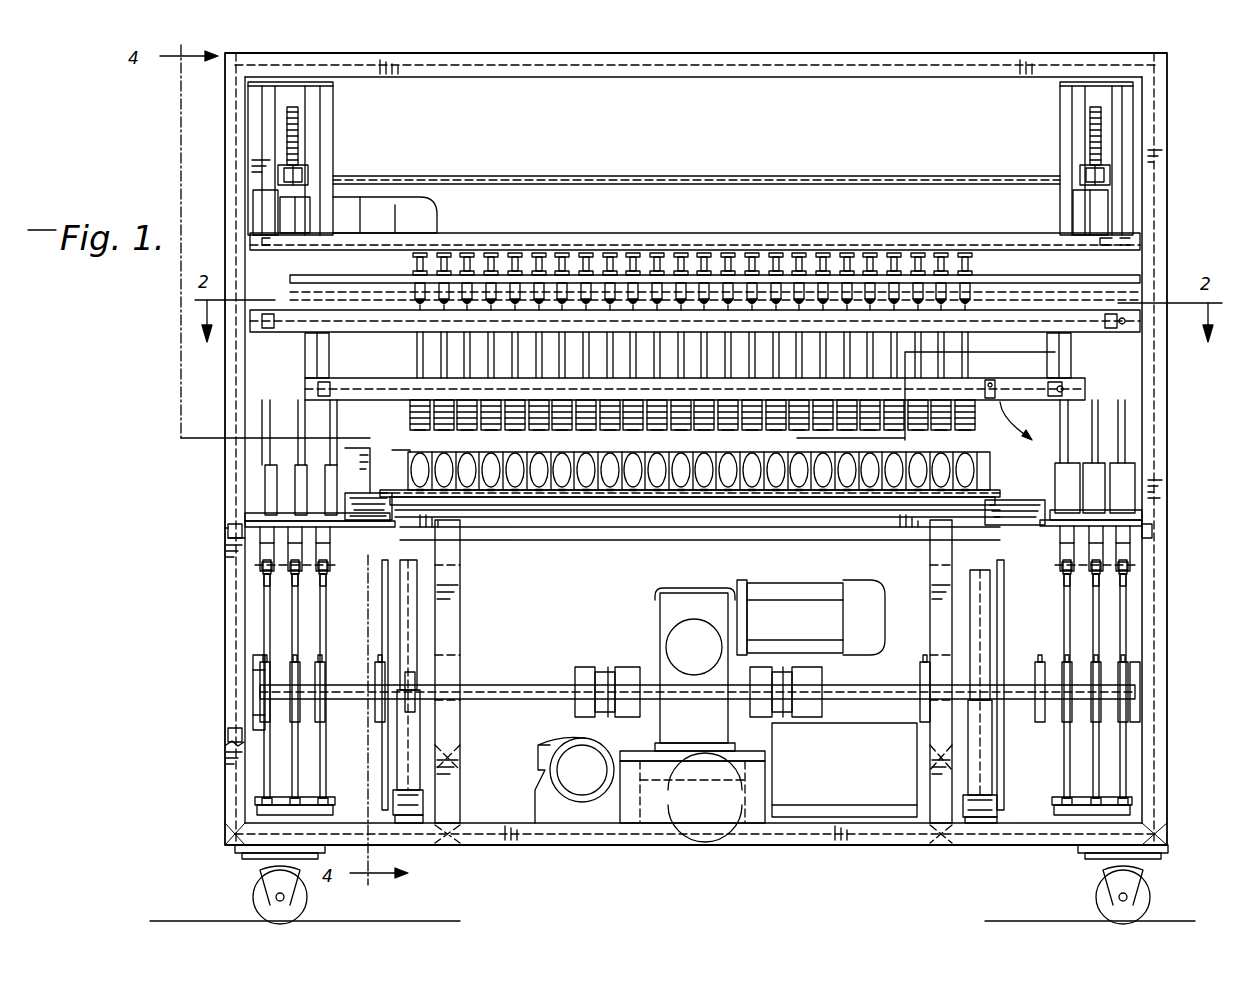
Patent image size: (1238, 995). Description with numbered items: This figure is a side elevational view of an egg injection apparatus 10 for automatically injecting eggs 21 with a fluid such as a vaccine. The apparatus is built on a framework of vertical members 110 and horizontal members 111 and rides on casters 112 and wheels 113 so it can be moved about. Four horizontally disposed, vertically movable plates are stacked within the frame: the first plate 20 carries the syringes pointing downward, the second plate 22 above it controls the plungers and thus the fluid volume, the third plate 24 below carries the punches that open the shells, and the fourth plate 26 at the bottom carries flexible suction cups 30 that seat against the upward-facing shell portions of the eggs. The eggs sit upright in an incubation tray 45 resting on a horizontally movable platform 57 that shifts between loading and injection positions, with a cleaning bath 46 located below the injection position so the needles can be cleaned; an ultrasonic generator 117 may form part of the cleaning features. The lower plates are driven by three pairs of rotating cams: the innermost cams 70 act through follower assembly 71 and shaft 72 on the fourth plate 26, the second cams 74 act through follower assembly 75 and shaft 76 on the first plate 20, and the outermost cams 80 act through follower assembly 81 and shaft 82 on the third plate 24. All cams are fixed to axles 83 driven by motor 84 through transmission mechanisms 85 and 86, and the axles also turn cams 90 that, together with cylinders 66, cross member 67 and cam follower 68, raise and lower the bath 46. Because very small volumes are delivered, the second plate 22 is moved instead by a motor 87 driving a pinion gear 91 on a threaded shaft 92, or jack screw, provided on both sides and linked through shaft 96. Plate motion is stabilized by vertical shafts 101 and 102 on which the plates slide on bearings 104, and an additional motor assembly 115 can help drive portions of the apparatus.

The apparatus 10 is at (200, 478).
The first plate 20 is at (1000, 270).
The egg 21 is at (745, 460).
The second plate 22 is at (850, 235).
The third plate 24 is at (1130, 330).
The fourth plate 26 is at (1085, 385).
The suction cups 30 is at (410, 415).
The incubation tray 45 is at (660, 498).
The cleaning bath 46 is at (612, 538).
The horizontally movable platform 57 is at (385, 488).
The cylinders 66 is at (445, 610).
The cross member 67 is at (420, 808).
The cam follower 68 is at (398, 820).
The cams 70 is at (328, 627).
The follower assembly 71 is at (328, 570).
The shaft 72 is at (328, 548).
The cams 74 is at (290, 595).
The follower assembly 75 is at (298, 580).
The shaft 76 is at (265, 528).
The cams 80 is at (264, 585).
The follower assembly 81 is at (262, 566).
The shaft 82 is at (245, 550).
The axles 83 is at (522, 685).
The motor 84 is at (810, 592).
The transmission mechanism 85 is at (680, 640).
The transmission mechanism 86 is at (592, 668).
The motor 87 is at (432, 208).
The cams 90 is at (380, 645).
The pinion gear 91 is at (300, 172).
The threaded shaft 92 is at (298, 150).
The shaft 96 is at (548, 178).
The vertical shaft 101 is at (262, 125).
The vertical shaft 102 is at (330, 107).
The bearings 104 is at (257, 205).
The vertical members 110 is at (236, 383).
The horizontal members 111 is at (706, 78).
The casters 112 is at (262, 868).
The wheels 113 is at (256, 900).
The motor assembly 115 is at (596, 771).
The ultrasonic generator 117 is at (858, 771).